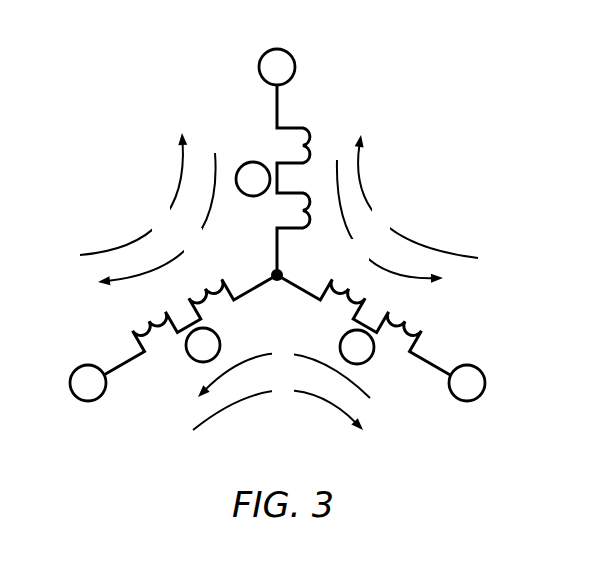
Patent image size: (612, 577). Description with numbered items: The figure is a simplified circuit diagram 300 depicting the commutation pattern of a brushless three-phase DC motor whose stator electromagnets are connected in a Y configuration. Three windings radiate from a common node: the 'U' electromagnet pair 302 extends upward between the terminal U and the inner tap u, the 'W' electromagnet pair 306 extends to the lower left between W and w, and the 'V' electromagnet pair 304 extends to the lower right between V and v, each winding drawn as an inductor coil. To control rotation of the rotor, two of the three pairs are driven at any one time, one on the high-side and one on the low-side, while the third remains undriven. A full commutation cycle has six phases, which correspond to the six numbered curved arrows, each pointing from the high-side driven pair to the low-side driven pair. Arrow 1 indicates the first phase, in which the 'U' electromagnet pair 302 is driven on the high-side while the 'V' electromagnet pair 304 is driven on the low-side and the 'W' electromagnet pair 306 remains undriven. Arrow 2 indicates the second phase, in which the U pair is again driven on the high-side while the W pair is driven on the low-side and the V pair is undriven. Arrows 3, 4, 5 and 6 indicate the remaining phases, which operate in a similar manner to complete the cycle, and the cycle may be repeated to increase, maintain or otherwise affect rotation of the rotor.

The three-phase motor winding configuration 300 is at (433, 93).
The 'U' electromagnet pair 302 is at (268, 83).
The 'V' electromagnet pair 304 is at (449, 383).
The 'W' electromagnet pair 306 is at (192, 358).
The arrow '1' 1 is at (390, 221).
The arrow '2' 2 is at (157, 219).
The arrow '3' 3 is at (284, 372).
The arrow '4' 4 is at (416, 196).
The arrow '5' 5 is at (133, 194).
The arrow '6' 6 is at (278, 402).